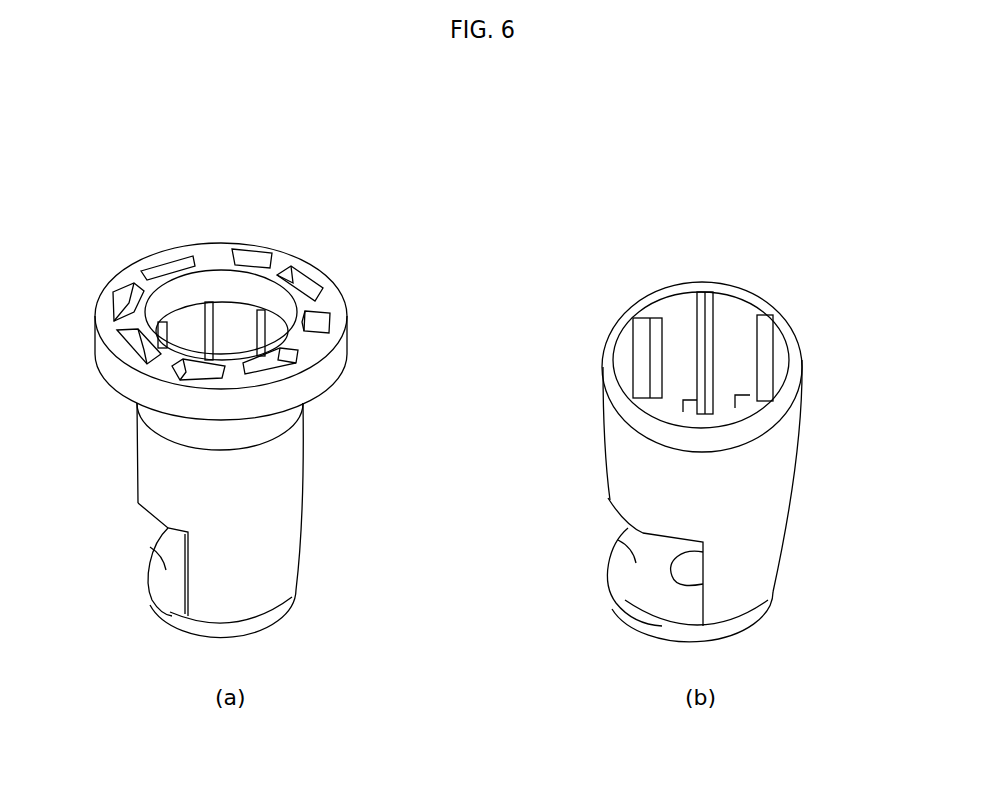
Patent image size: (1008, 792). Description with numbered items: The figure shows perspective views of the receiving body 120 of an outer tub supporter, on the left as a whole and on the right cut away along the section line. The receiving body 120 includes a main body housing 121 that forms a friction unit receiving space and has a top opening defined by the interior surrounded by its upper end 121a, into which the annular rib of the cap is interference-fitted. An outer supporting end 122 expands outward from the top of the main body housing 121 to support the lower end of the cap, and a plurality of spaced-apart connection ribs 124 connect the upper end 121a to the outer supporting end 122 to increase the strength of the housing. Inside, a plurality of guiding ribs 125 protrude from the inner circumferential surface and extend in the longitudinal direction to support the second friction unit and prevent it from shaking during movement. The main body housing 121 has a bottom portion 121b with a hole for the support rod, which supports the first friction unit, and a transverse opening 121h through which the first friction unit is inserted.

The receiving body 120 is at (88, 223).
The main body housing 121 is at (760, 477).
The upper end of the main body housing 121a is at (230, 267).
The bottom portion 121b is at (170, 590).
The transverse opening 121h is at (139, 531).
The outer supporting end 122 is at (335, 293).
The connection ribs 124 is at (312, 348).
The guiding ribs 125 is at (198, 322).